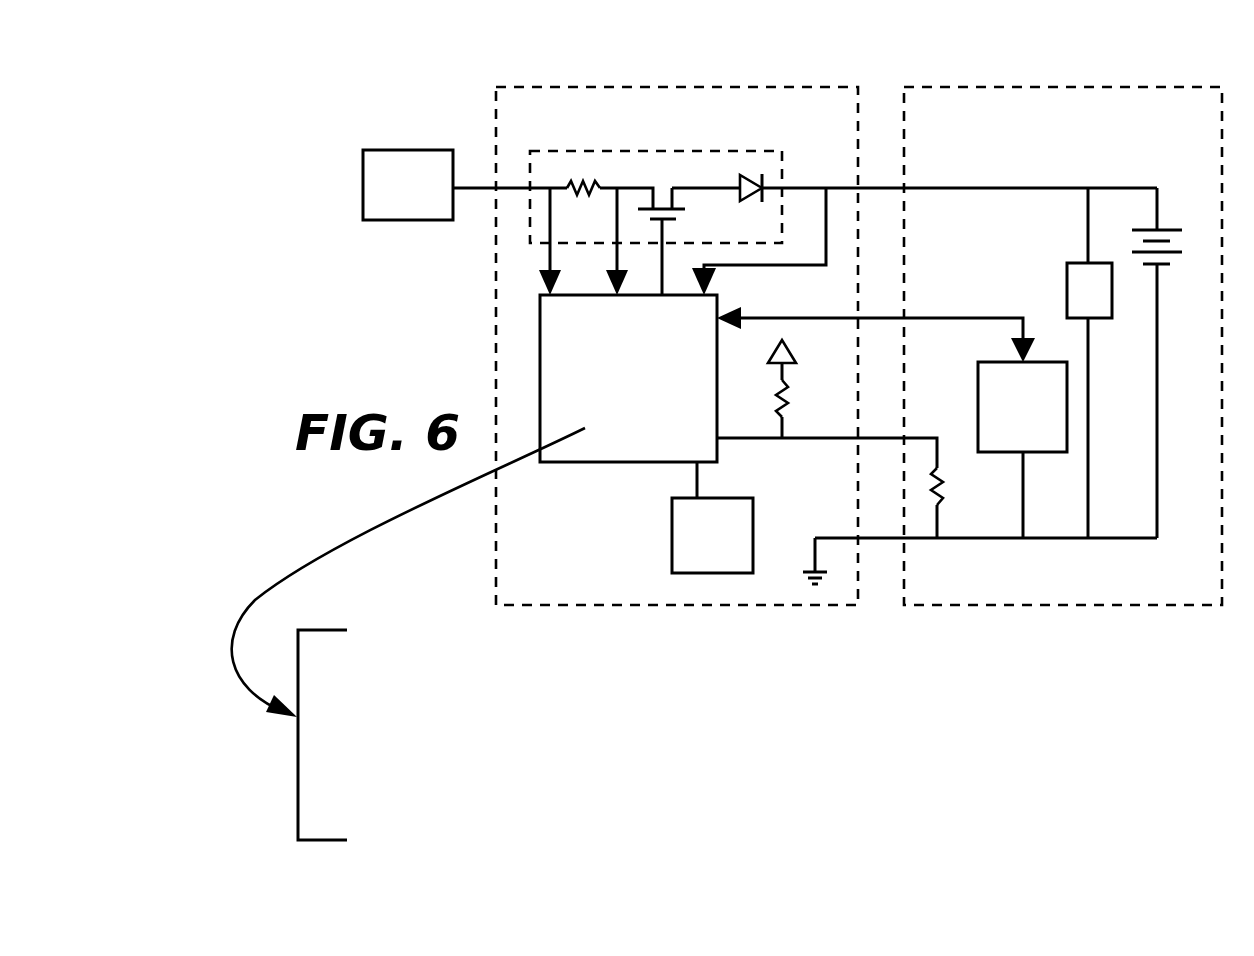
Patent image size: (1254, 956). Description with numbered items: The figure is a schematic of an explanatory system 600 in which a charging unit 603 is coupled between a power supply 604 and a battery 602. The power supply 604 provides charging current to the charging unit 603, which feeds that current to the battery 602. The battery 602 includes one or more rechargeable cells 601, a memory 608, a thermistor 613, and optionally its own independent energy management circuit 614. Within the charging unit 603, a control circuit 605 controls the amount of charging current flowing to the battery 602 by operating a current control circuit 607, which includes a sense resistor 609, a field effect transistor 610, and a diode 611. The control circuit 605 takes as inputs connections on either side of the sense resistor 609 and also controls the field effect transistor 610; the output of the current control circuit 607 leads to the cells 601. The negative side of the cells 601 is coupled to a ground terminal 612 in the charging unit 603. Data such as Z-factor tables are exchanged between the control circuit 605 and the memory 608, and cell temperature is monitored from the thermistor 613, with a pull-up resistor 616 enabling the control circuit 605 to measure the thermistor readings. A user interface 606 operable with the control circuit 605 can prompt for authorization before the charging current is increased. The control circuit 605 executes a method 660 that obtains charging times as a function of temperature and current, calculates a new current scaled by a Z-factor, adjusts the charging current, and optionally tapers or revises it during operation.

The explanatory system 600 is at (412, 104).
The rechargeable cells 601 is at (1167, 228).
The battery 602 is at (1100, 86).
The charging unit 603 is at (702, 86).
The power supply 604 is at (410, 222).
The control circuit 605 is at (607, 464).
The user interface 606 is at (672, 528).
The current control circuit 607 is at (637, 150).
The memory 608 is at (978, 394).
The sense resistor 609 is at (585, 178).
The field effect transistor 610 is at (662, 180).
The diode 611 is at (752, 174).
The ground terminal 612 is at (820, 586).
The thermistor 613 is at (940, 490).
The energy management circuit 614 is at (1067, 292).
The pull-up resistor 616 is at (786, 403).
The method 660 is at (297, 807).